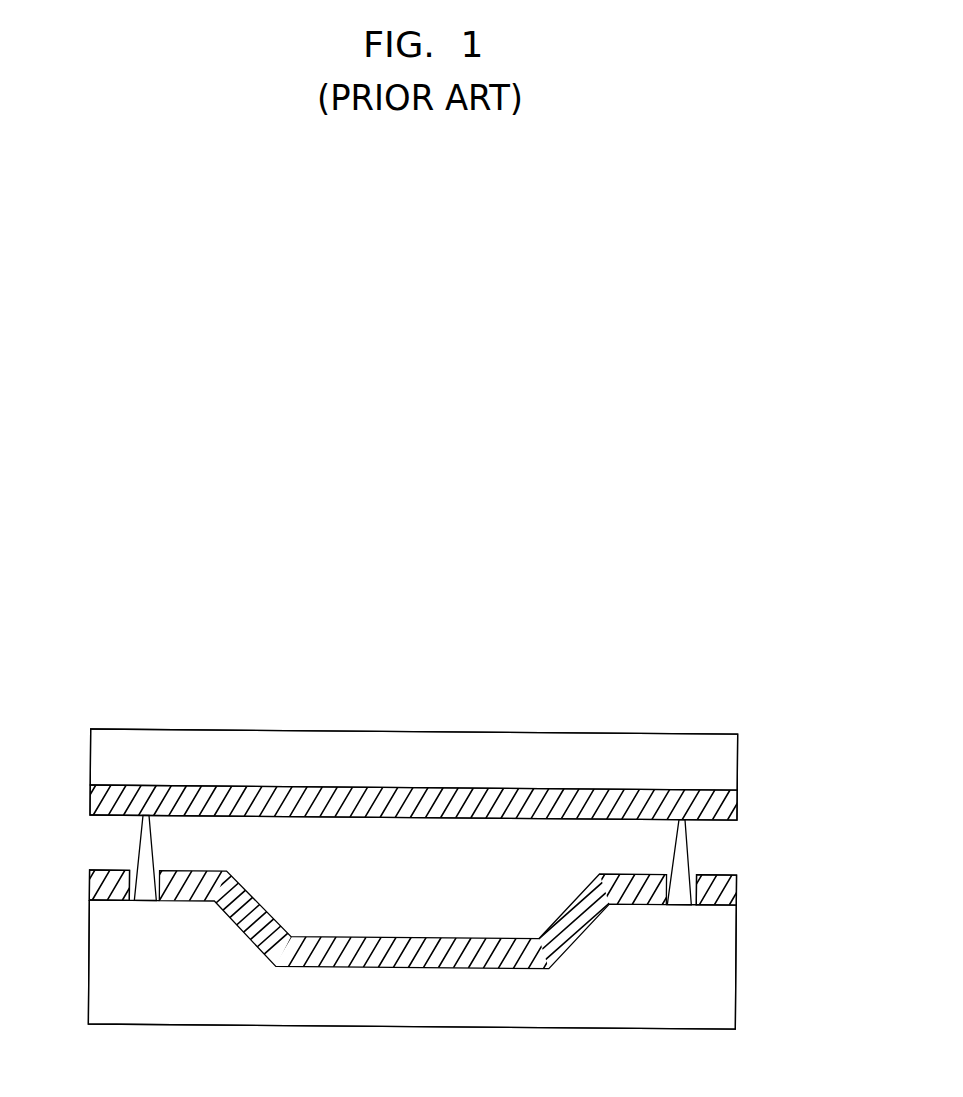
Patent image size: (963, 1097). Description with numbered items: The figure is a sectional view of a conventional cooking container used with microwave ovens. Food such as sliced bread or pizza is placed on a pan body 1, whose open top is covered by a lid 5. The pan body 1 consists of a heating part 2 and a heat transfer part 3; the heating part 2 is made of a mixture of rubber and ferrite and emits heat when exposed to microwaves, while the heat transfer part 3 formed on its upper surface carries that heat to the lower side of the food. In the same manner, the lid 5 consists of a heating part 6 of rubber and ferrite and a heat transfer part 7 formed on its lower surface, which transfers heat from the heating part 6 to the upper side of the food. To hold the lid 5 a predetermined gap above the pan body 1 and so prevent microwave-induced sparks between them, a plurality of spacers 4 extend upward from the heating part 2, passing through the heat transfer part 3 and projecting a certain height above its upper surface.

The pan body 1 is at (760, 955).
The heating part 2 is at (712, 993).
The heat transfer part 3 is at (728, 892).
The spacers 4 is at (143, 848).
The lid 5 is at (760, 774).
The heating part 6 is at (705, 742).
The heat transfer part 7 is at (722, 805).